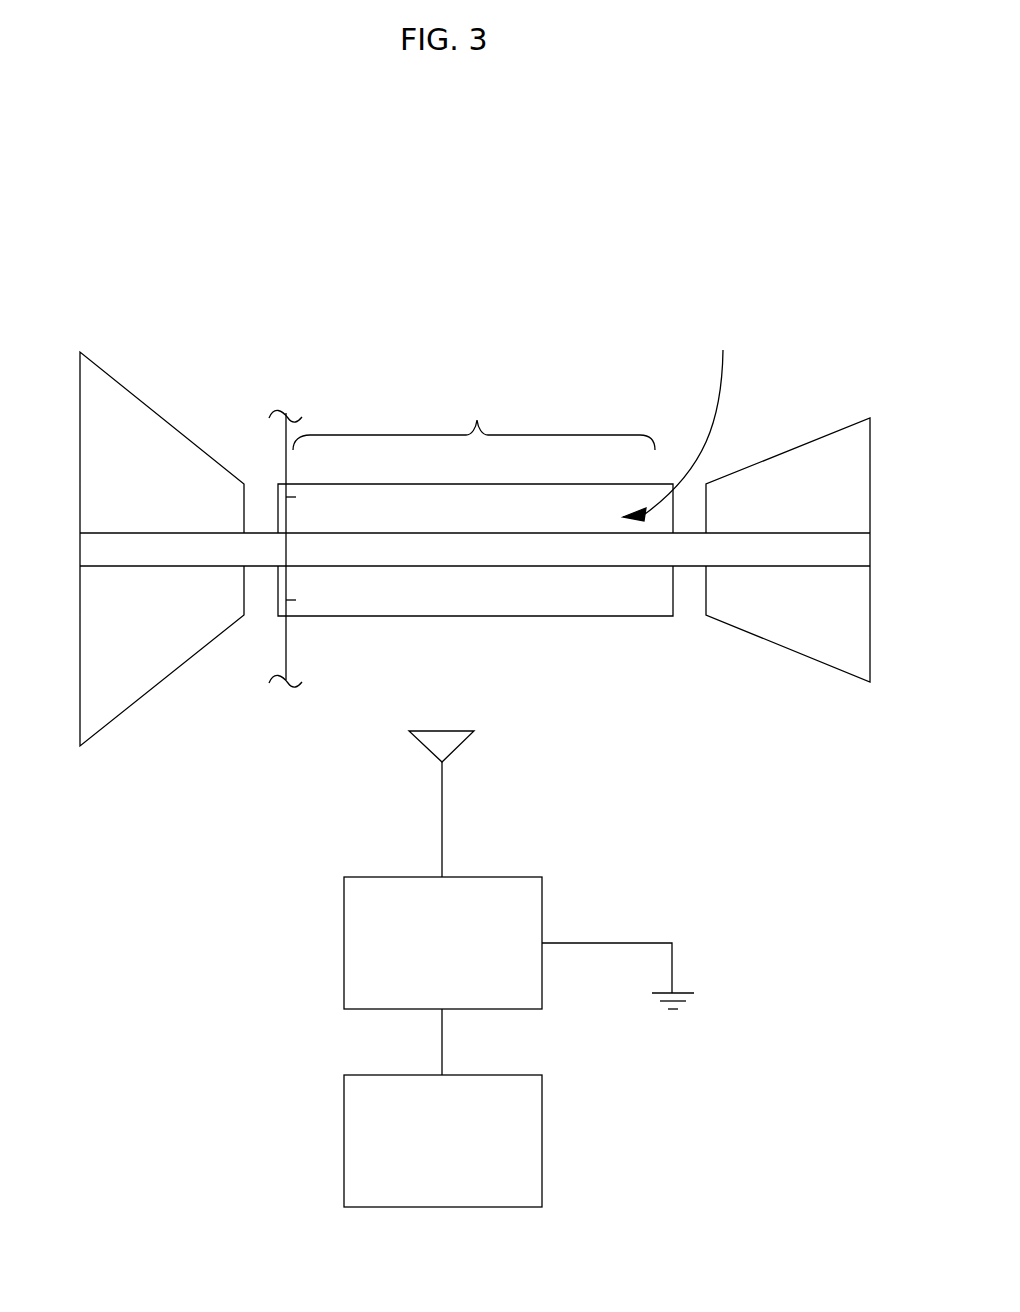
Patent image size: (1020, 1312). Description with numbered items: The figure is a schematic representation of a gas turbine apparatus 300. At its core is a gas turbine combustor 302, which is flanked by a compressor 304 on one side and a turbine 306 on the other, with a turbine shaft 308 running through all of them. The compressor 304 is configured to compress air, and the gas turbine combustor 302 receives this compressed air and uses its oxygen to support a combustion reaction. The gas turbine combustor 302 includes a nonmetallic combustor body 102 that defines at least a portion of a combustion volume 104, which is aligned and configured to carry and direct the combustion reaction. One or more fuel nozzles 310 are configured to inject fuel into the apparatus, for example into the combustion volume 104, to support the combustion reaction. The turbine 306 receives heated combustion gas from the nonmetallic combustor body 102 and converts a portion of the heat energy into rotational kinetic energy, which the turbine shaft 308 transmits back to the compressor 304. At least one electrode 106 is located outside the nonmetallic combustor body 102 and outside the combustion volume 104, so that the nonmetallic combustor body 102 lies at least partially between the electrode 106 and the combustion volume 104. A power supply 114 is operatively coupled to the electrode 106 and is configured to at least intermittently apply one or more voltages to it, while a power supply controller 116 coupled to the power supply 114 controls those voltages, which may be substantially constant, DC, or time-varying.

The gas turbine apparatus 300 is at (270, 219).
The nonmetallic combustor body 102 is at (631, 616).
The combustion volume 104 is at (684, 420).
The electrode 106 is at (474, 731).
The power supply 114 is at (519, 943).
The power supply controller 116 is at (443, 1108).
The gas turbine combustor 302 is at (474, 419).
The compressor 304 is at (157, 684).
The turbine 306 is at (772, 642).
The turbine shaft 308 is at (150, 533).
The fuel nozzle 310 is at (298, 600).